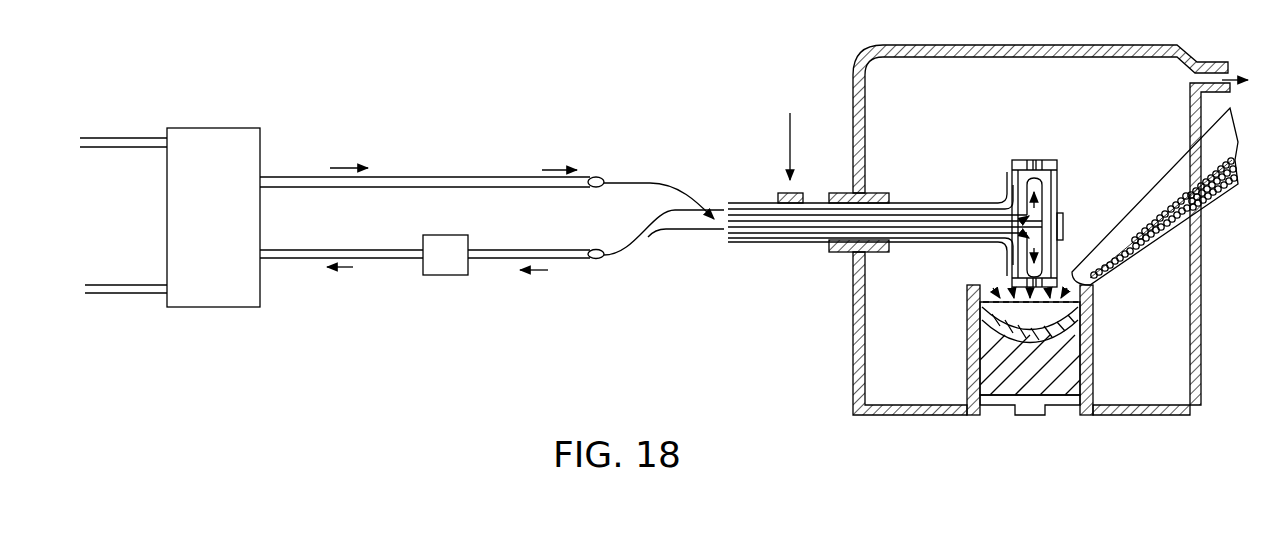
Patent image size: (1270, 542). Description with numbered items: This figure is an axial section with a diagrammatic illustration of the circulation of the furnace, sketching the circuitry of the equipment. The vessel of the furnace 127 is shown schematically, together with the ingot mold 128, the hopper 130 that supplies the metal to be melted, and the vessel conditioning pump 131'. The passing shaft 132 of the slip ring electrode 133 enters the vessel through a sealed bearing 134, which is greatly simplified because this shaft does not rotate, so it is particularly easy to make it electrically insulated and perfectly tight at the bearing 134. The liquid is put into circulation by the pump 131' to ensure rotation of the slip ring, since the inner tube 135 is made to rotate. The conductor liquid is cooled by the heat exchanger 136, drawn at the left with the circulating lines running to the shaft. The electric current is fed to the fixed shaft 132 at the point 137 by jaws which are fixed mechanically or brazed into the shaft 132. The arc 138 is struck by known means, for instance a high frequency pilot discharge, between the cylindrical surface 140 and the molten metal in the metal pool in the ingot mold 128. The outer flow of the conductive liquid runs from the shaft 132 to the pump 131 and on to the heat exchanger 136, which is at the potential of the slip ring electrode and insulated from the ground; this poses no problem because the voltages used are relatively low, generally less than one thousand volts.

The furnace vessel 127 is at (851, 346).
The ingot mold 128 is at (967, 348).
The hopper 130 is at (1167, 183).
The pump 131 is at (445, 277).
The vessel conditioning pump 131' is at (1224, 49).
The passing shaft 132 is at (728, 210).
The slip ring electrode 133 is at (1010, 166).
The sealed bearing 134 is at (845, 190).
The inner tube 135 is at (730, 210).
The heat exchanger 136 is at (213, 165).
The current feed point 137 is at (790, 147).
The arc 138 is at (1003, 296).
The cylindrical surface 140 is at (1030, 160).